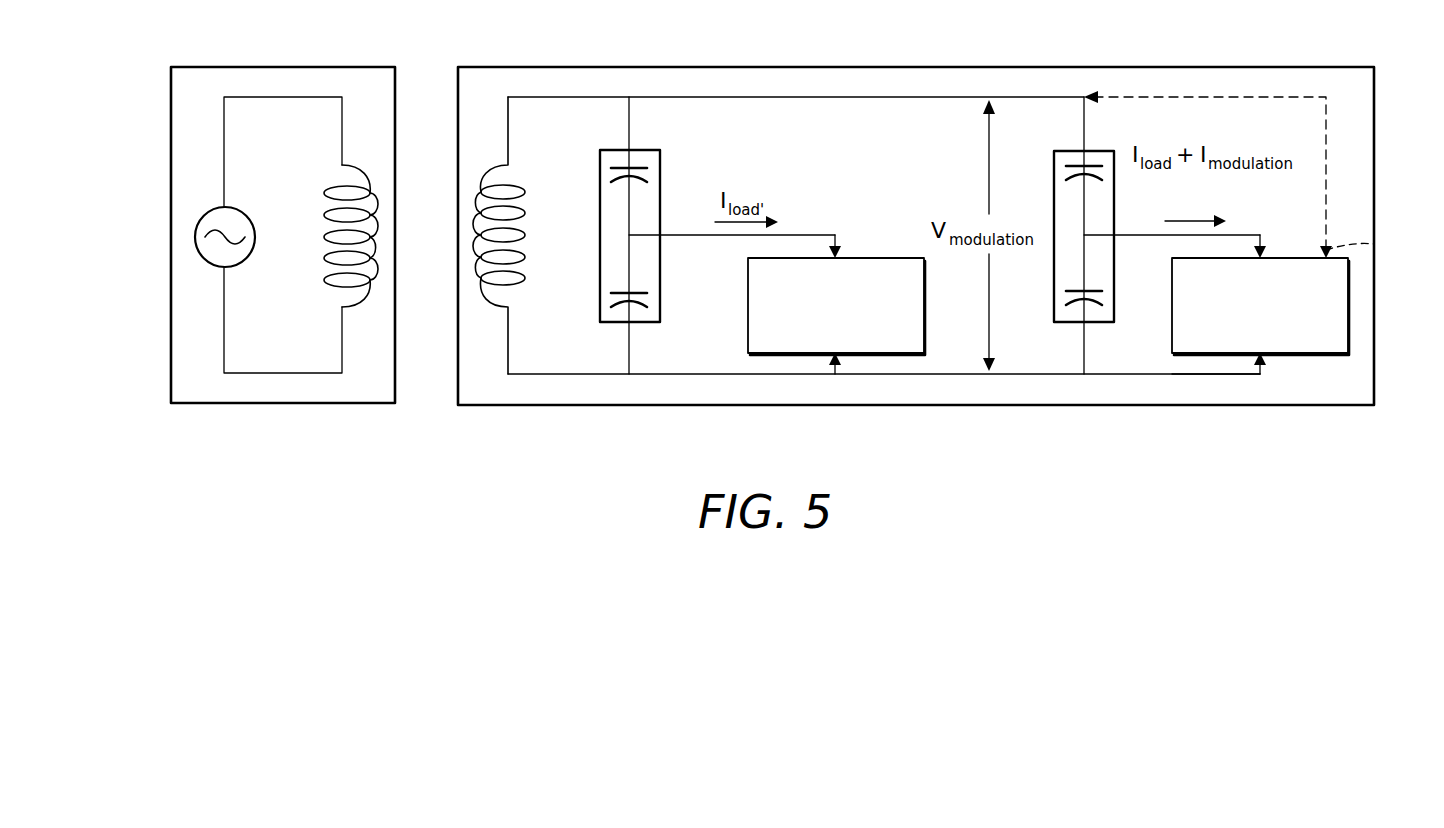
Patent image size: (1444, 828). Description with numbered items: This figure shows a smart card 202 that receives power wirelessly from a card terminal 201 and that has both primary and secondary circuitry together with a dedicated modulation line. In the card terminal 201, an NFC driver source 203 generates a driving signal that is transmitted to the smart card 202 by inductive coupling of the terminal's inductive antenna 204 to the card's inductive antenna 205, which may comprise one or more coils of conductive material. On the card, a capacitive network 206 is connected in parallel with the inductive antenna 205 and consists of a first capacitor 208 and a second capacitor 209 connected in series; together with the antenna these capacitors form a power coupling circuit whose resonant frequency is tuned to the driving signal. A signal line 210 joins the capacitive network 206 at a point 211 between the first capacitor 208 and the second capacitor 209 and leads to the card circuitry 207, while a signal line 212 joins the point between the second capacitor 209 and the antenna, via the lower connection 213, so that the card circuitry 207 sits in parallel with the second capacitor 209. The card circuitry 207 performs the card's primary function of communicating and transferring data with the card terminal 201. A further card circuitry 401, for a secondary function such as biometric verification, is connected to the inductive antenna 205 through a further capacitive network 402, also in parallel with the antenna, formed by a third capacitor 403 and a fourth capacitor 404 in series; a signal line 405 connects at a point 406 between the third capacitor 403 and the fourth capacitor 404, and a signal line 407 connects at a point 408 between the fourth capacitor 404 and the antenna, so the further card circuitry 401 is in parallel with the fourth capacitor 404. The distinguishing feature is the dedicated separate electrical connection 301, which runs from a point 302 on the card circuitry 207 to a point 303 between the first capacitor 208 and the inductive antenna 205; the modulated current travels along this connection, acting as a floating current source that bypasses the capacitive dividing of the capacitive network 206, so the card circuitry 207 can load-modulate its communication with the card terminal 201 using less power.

The card terminal 201 is at (359, 67).
The smart card 202 is at (1341, 67).
The NFC driver source 203 is at (195, 237).
The inductive antenna 204 is at (360, 166).
The inductive antenna 205 is at (484, 309).
The capacitive network 206 is at (1054, 162).
The card circuitry 207 is at (1325, 355).
The first capacitor 208 is at (1075, 166).
The second capacitor 209 is at (1073, 304).
The signal line 210 is at (1257, 236).
The point 211 is at (1088, 235).
The signal line 212 is at (1202, 374).
The lower connection of capacitive element 213 is at (1084, 374).
The dedicated separate electrical connection 301 is at (1226, 97).
The point 302 is at (1374, 244).
The point 303 is at (1084, 97).
The further card circuitry 401 is at (900, 355).
The further capacitive network 402 is at (600, 318).
The third capacitor 403 is at (644, 168).
The fourth capacitor 404 is at (642, 306).
The signal line 405 is at (814, 236).
The point 406 is at (630, 236).
The signal line 407 is at (752, 374).
The point 408 is at (629, 374).